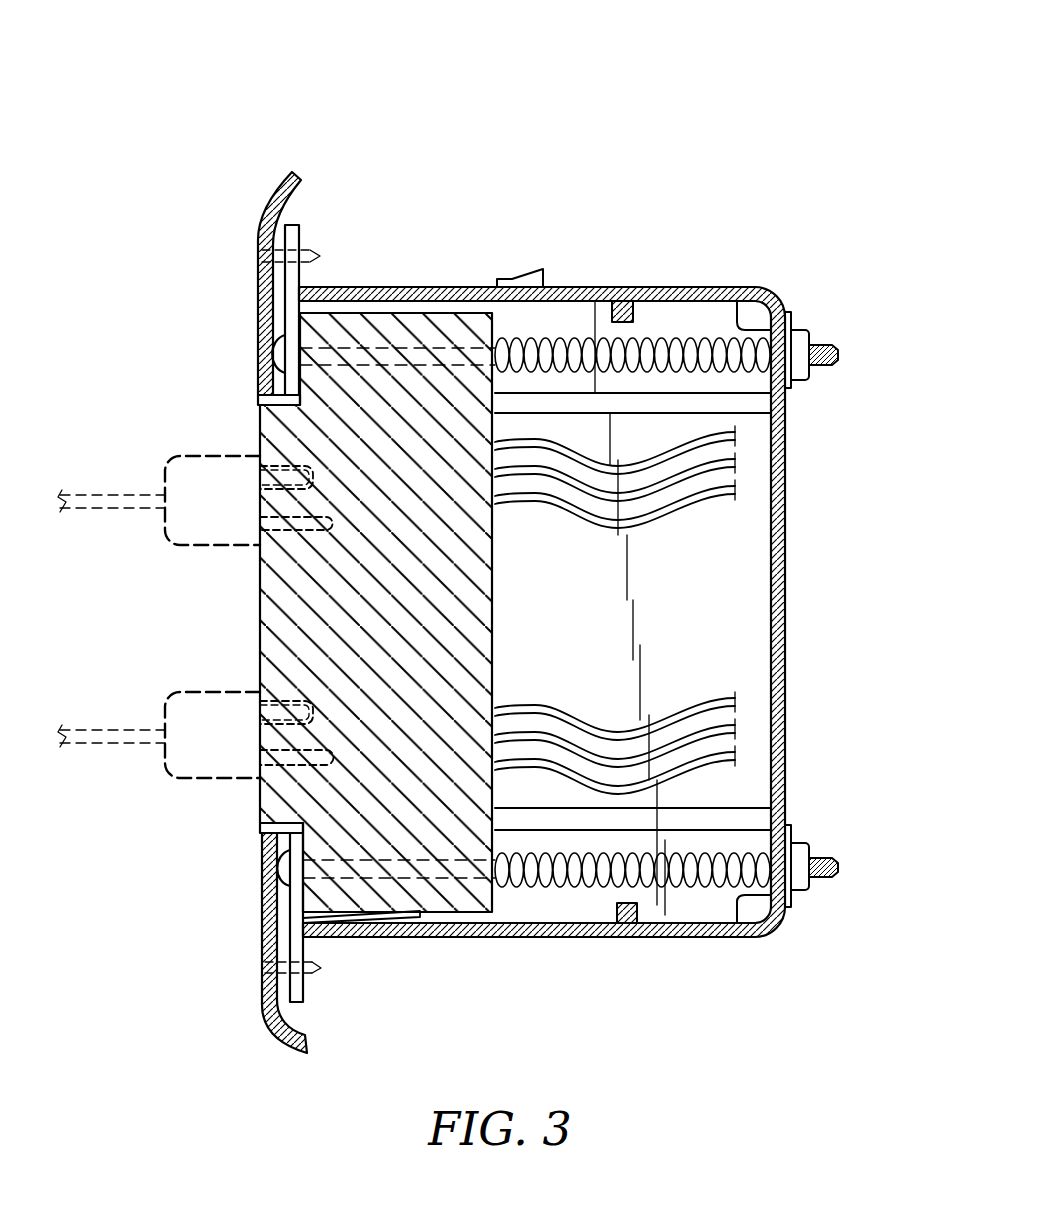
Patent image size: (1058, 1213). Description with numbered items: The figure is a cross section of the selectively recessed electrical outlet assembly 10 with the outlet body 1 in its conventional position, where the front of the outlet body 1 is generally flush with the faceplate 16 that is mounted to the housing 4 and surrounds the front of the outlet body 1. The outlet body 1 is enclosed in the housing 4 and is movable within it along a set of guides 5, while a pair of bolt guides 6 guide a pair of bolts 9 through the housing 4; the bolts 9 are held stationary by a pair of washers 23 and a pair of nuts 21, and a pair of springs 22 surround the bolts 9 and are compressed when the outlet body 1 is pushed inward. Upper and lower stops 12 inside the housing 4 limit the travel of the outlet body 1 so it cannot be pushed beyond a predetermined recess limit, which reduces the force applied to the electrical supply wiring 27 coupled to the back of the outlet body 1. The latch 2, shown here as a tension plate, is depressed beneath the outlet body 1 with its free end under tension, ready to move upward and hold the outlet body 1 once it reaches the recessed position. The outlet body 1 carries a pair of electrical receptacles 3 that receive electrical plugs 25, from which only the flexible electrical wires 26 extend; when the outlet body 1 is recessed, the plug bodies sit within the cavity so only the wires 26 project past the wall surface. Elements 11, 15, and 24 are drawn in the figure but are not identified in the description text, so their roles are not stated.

The outlet body 1 is at (400, 569).
The latch 2 is at (370, 924).
The electrical receptacles 3 is at (262, 440).
The housing 4 is at (567, 287).
The guides 5 is at (752, 405).
The bolt guides 6 is at (295, 330).
The bolts 9 is at (753, 317).
The selectively recessed electrical outlet assembly 10 is at (540, 167).
The clamping plate 11 is at (318, 252).
The upper and lower stops 12 is at (617, 300).
The housing side wall 15 is at (770, 290).
The faceplate 16 is at (272, 187).
The nuts 21 is at (800, 876).
The springs 22 is at (680, 340).
The washers 23 is at (795, 392).
The bolt axis 24 is at (424, 347).
The electrical plugs 25 is at (240, 540).
The electrical wires 26 is at (75, 505).
The electrical supply wiring 27 is at (697, 510).